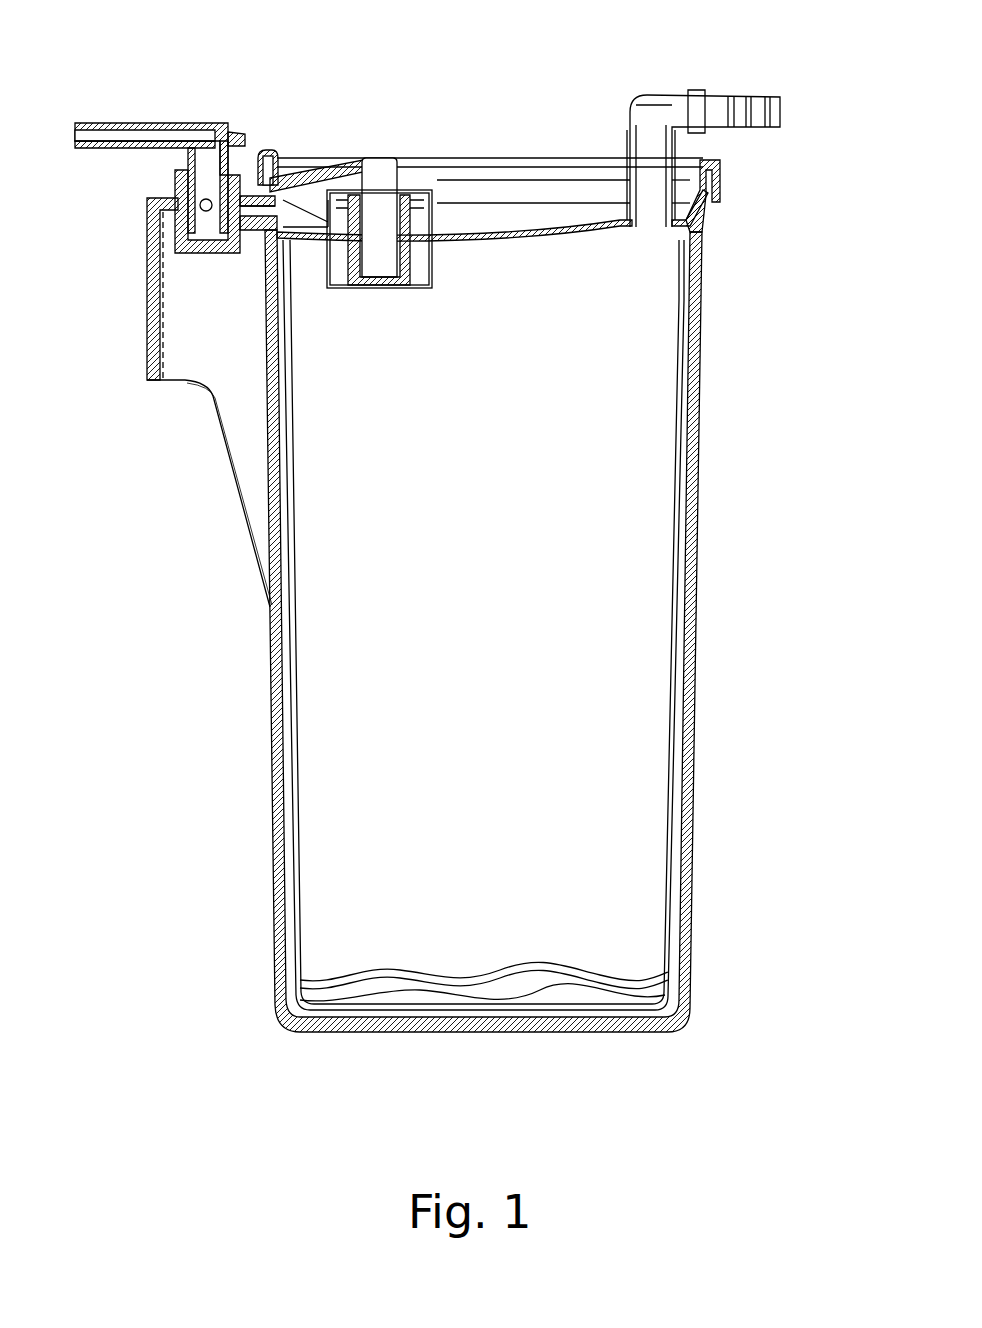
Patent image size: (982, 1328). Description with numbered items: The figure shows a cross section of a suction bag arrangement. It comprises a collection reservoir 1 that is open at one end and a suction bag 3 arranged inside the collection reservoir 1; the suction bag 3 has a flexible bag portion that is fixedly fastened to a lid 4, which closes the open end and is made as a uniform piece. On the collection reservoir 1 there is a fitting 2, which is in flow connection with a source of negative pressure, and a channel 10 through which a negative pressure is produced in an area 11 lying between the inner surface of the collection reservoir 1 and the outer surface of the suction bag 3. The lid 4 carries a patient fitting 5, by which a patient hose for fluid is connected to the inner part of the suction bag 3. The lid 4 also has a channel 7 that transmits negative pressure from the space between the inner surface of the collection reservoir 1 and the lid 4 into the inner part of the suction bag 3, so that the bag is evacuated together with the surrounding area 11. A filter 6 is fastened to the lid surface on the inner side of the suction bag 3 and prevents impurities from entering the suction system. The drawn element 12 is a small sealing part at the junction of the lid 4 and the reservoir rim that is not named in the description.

The collection reservoir 1 is at (695, 540).
The fitting 2 is at (126, 135).
The suction bag 3 is at (672, 465).
The lid 4 is at (475, 240).
The patient fitting 5 is at (732, 108).
The filter 6 is at (432, 200).
The channel 7 is at (348, 170).
The channel 10 is at (224, 240).
The area 11 is at (285, 370).
The seal 12 is at (260, 150).